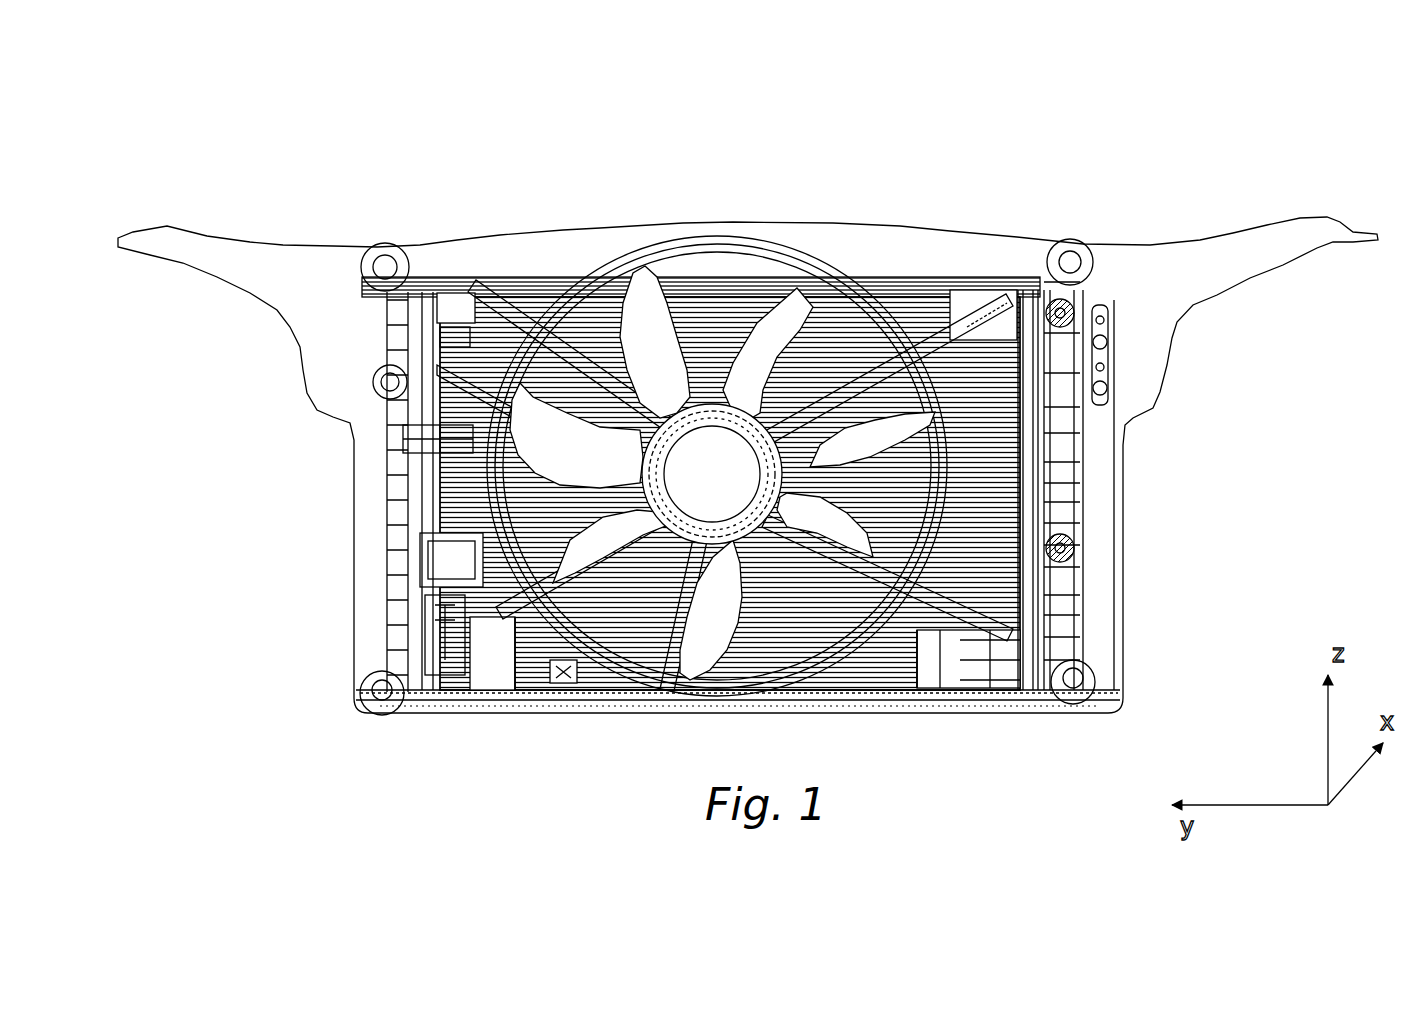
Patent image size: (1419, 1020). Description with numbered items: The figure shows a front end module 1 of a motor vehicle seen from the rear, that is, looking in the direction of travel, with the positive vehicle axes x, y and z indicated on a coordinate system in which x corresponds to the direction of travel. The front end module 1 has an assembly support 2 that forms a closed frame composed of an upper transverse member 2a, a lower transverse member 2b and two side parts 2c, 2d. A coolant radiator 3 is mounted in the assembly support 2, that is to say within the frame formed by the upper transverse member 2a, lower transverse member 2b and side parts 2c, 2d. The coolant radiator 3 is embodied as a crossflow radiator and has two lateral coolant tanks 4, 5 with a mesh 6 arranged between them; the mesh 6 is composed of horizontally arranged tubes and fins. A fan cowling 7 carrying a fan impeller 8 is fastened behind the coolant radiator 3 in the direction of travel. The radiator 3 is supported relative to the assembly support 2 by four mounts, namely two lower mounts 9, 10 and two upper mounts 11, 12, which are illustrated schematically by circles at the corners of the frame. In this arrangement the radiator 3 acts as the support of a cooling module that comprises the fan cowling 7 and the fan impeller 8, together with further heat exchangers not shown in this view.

The front end module 1 is at (1003, 155).
The assembly support 2 is at (300, 372).
The upper transverse member 2a is at (565, 256).
The lower transverse member 2b is at (545, 705).
The side part 2c is at (1100, 530).
The side part 2d is at (365, 500).
The coolant radiator 3 is at (1120, 460).
The coolant tank 4 is at (415, 615).
The coolant tank 5 is at (1085, 575).
The mesh 6 is at (648, 665).
The fan cowling 7 is at (470, 345).
The fan impeller 8 is at (707, 545).
The lower mount 9 is at (372, 717).
The lower mount 10 is at (1075, 715).
The upper mount 11 is at (376, 245).
The upper mount 12 is at (1075, 243).